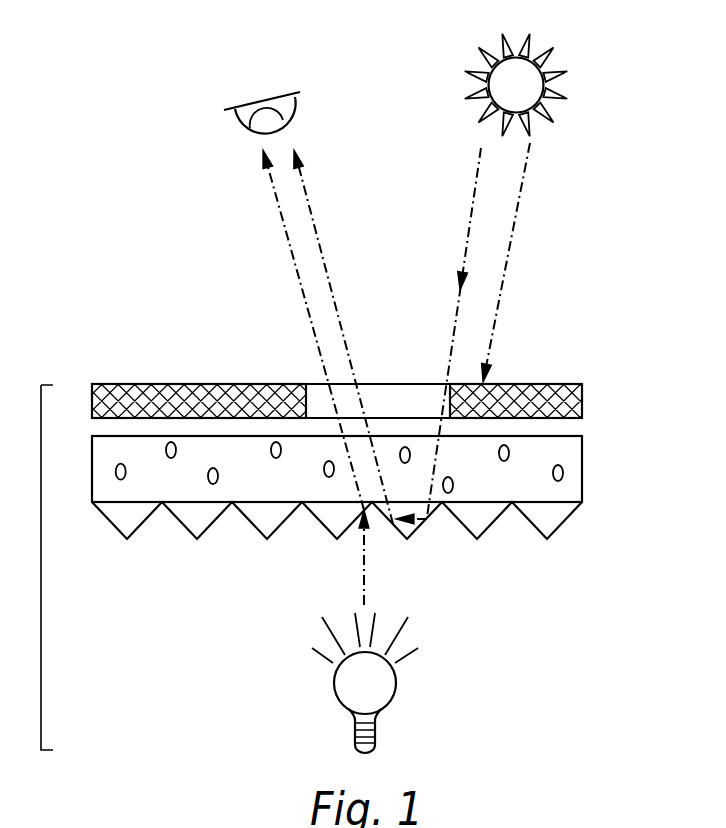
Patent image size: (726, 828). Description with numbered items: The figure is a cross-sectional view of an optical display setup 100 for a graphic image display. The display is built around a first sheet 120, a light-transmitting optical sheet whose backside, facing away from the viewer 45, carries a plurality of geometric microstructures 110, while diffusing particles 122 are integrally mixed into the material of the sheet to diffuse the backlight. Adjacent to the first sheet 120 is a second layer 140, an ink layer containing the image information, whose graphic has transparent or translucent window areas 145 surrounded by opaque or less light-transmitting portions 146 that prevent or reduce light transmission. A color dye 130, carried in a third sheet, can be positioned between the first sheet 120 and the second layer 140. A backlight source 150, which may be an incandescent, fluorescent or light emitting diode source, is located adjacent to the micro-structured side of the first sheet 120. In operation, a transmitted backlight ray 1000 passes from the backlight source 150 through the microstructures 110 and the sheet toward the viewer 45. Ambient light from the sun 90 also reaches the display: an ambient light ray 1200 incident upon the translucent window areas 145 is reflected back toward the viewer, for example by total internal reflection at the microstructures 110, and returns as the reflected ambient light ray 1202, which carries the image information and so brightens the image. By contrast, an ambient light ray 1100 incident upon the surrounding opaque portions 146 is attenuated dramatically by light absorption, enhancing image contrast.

The optical display setup 100 is at (62, 567).
The geometric microstructures 110 is at (565, 527).
The first sheet 120 is at (381, 478).
The diffusing particles 122 is at (563, 475).
The color dye 130 is at (545, 432).
The second layer 140 is at (523, 390).
The window areas 145 is at (388, 398).
The opaque portions 146 is at (187, 385).
The backlight source 150 is at (378, 695).
The viewer 45 is at (240, 126).
The sun / ambient light source 90 is at (558, 106).
The transmitted backlight ray 1000 is at (297, 270).
The ambient light ray 1100 is at (518, 194).
The ambient light ray 1200 is at (473, 196).
The reflected ambient light ray 1202 is at (318, 240).